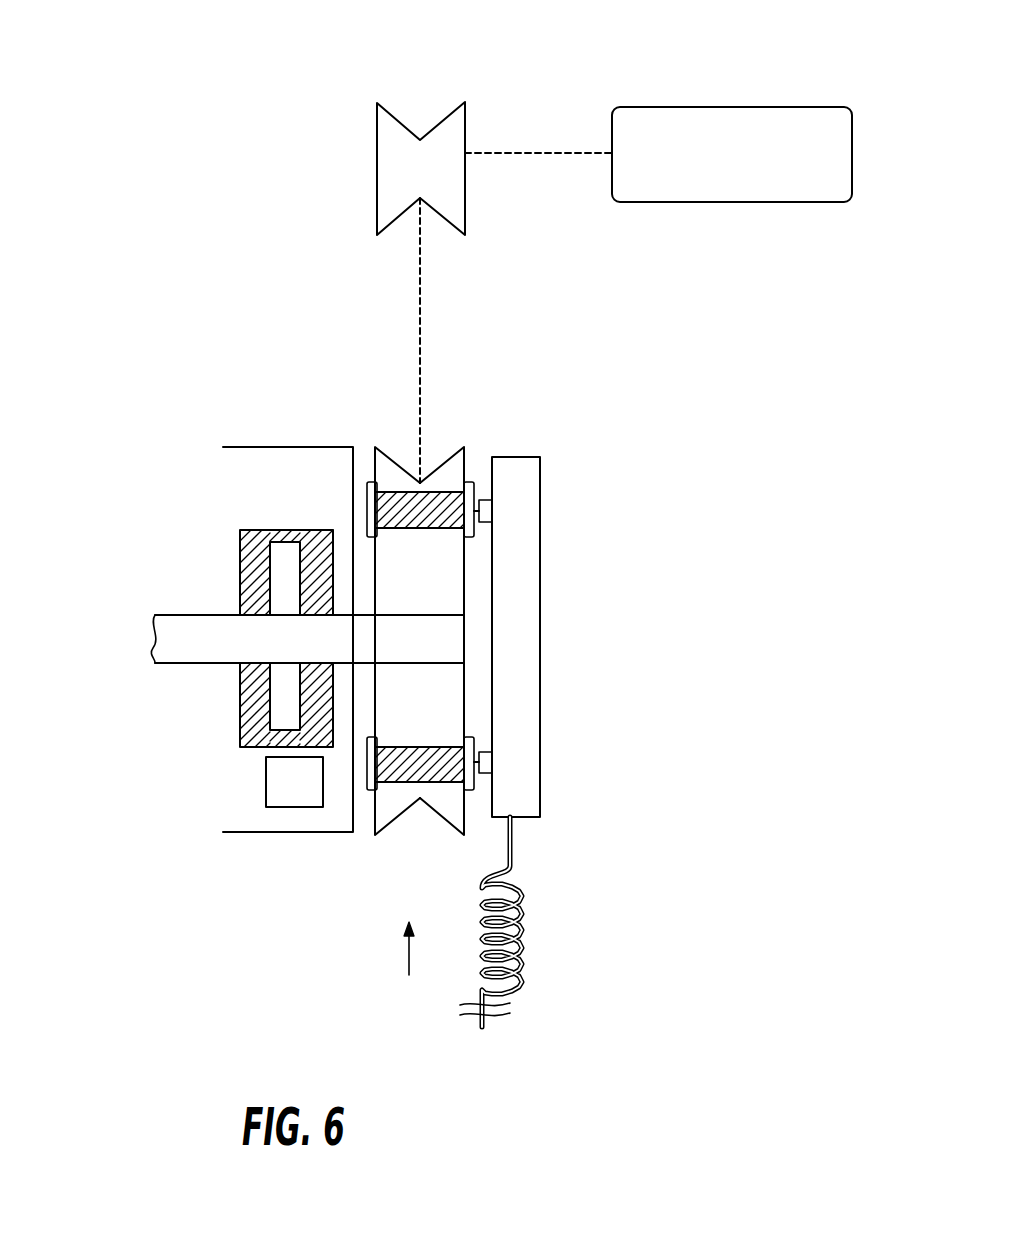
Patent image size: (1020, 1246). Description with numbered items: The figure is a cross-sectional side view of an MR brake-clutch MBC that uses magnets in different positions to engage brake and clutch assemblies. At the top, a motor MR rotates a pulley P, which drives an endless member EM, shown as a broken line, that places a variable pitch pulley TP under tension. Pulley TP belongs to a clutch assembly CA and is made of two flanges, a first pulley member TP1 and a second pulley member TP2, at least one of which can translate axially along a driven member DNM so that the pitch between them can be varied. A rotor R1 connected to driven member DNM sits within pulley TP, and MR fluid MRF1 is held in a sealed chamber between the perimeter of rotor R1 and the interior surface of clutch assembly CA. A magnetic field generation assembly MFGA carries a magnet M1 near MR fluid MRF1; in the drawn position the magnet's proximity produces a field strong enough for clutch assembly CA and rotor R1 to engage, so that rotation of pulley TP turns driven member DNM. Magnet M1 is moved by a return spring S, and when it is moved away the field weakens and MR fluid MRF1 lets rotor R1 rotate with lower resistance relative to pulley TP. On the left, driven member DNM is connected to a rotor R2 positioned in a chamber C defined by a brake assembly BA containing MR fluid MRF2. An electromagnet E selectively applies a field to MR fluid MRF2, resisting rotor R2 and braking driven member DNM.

The pulley P is at (384, 106).
The motor MR is at (748, 107).
The MR brake-clutch MBC is at (165, 238).
The endless member EM is at (418, 250).
The variable pitch pulley TP is at (435, 612).
The first pulley member TP1 is at (412, 476).
The second pulley member TP2 is at (432, 478).
The rotor R1 is at (412, 620).
The MR fluid MRF1 is at (400, 492).
The magnet M1 is at (480, 498).
The magnetic field generation assembly MFGA is at (545, 425).
The brake assembly BA is at (256, 447).
The rotor R2 is at (238, 626).
The chamber C is at (318, 542).
The driven member DNM is at (212, 665).
The MR fluid MRF2 is at (255, 737).
The electromagnet E is at (265, 795).
The return spring S is at (522, 922).
The clutch assembly CA is at (408, 970).